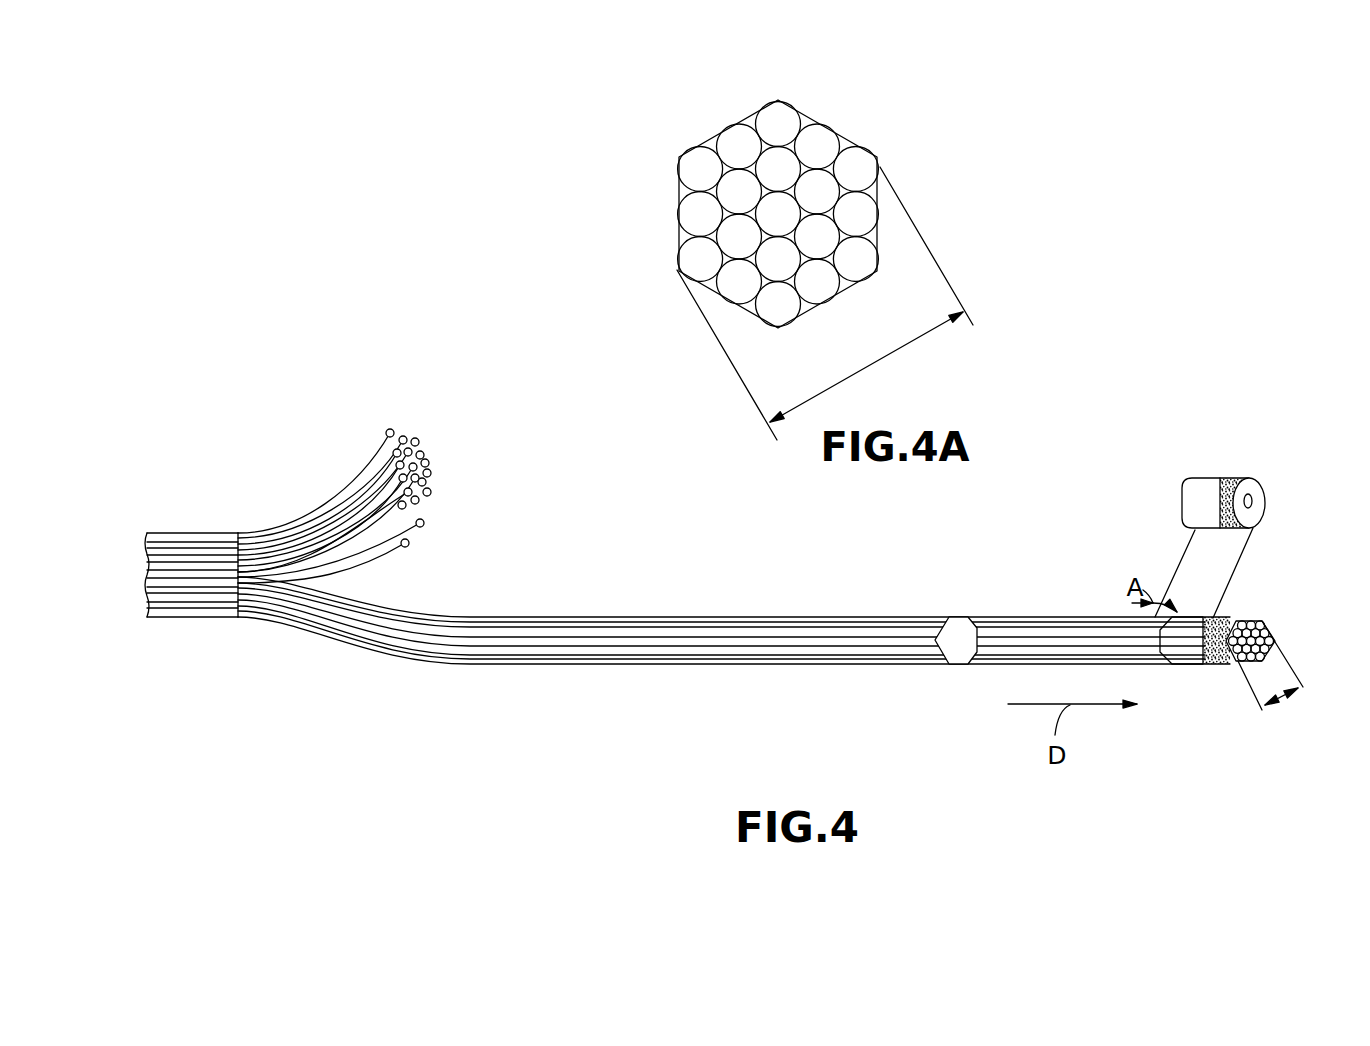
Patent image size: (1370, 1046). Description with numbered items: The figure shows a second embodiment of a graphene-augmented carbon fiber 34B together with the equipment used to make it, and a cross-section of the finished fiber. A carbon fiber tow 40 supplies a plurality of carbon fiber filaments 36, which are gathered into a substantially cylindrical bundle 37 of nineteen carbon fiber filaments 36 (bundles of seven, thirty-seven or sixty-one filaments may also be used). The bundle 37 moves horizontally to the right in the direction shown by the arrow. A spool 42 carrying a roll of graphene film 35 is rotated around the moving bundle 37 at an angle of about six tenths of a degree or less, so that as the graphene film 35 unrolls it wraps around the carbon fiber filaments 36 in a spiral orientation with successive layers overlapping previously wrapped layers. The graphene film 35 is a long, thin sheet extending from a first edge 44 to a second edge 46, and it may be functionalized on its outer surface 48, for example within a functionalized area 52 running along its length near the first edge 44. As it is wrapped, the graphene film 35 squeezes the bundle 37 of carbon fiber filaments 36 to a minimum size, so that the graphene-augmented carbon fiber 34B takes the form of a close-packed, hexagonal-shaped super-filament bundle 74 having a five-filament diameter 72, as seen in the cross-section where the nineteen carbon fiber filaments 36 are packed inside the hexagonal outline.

In FIG. 4A, the graphene-augmented carbon fiber 34B is at (831, 259).
In FIG. 4, the graphene-augmented carbon fiber 34B is at (1296, 654).
In FIG. 4, the graphene film 35 is at (1207, 569).
In FIG. 4A, the carbon fiber filament 36 is at (853, 227).
In FIG. 4, the carbon fiber filament 36 is at (372, 492).
In FIG. 4, the bundle 37 is at (972, 662).
In FIG. 4, the carbon fiber tow 40 is at (212, 533).
In FIG. 4, the spool 42 is at (1253, 501).
In FIG. 4, the first edge 44 is at (1243, 553).
In FIG. 4, the second edge 46 is at (1173, 573).
In FIG. 4, the outer surface 48 is at (1177, 650).
In FIG. 4, the functionalized area 52 is at (1208, 650).
In FIG. 4A, the five-filament diameter 72 is at (867, 370).
In FIG. 4, the five-filament diameter 72 is at (1282, 697).
In FIG. 4A, the super-filament bundle 74 is at (703, 142).
In FIG. 4, the super-filament bundle 74 is at (1247, 621).